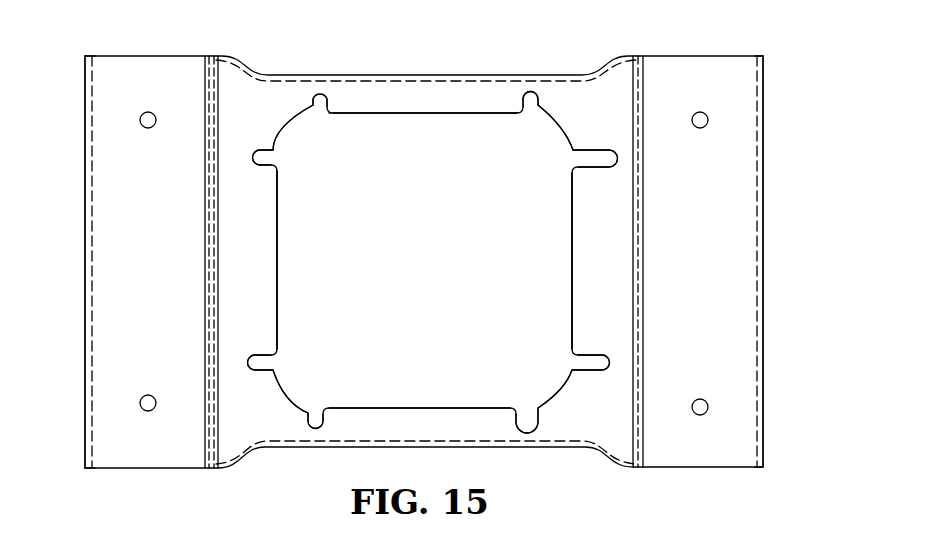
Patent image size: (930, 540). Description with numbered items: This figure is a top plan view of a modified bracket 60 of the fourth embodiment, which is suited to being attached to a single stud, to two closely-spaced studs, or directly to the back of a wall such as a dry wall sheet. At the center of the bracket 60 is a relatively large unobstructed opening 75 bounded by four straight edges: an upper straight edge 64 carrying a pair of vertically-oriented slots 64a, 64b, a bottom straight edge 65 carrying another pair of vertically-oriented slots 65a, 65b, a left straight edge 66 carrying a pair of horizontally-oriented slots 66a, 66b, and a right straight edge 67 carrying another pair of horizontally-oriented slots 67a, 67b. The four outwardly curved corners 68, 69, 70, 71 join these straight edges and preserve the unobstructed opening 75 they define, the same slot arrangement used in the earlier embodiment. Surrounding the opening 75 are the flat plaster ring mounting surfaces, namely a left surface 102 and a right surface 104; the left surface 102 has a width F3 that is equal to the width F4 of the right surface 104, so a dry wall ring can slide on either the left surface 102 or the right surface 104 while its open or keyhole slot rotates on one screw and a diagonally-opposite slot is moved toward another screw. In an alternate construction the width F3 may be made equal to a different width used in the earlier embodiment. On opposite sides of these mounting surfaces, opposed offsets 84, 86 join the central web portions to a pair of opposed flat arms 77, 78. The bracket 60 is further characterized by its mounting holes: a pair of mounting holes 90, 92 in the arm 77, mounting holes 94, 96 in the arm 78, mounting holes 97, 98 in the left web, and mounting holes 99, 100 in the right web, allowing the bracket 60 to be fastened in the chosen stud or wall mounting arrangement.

The bracket 60 is at (449, 76).
The upper straight edge 64 is at (475, 114).
The vertically-oriented slot 64a is at (327, 108).
The vertically-oriented slot 64b is at (533, 108).
The bottom straight edge 65 is at (438, 372).
The vertically-oriented slot 65a is at (311, 418).
The vertically-oriented slot 65b is at (528, 420).
The left straight edge 66 is at (279, 268).
The horizontally-oriented slot 66a is at (272, 157).
The horizontally-oriented slot 66b is at (268, 368).
The right straight edge 67 is at (572, 268).
The horizontally-oriented slot 67a is at (590, 160).
The horizontally-oriented slot 67b is at (585, 365).
The outwardly curved corner 68 is at (287, 124).
The outwardly curved corner 69 is at (566, 134).
The outwardly curved corner 70 is at (571, 393).
The outwardly curved corner 71 is at (283, 393).
The unobstructed opening 75 is at (414, 166).
The flat arm 77 is at (88, 172).
The flat arm 78 is at (760, 168).
The offset 84 is at (210, 450).
The offset 86 is at (637, 455).
The mounting hole 90 is at (88, 407).
The mounting hole 92 is at (87, 122).
The mounting hole 94 is at (762, 405).
The mounting hole 96 is at (765, 118).
The mounting hole 97 is at (152, 395).
The mounting hole 98 is at (150, 112).
The mounting hole 99 is at (703, 390).
The mounting hole 100 is at (703, 103).
The left surface 102 is at (250, 298).
The right surface 104 is at (580, 298).
The width of left surface F3 is at (275, 212).
The width of right surface F4 is at (631, 212).